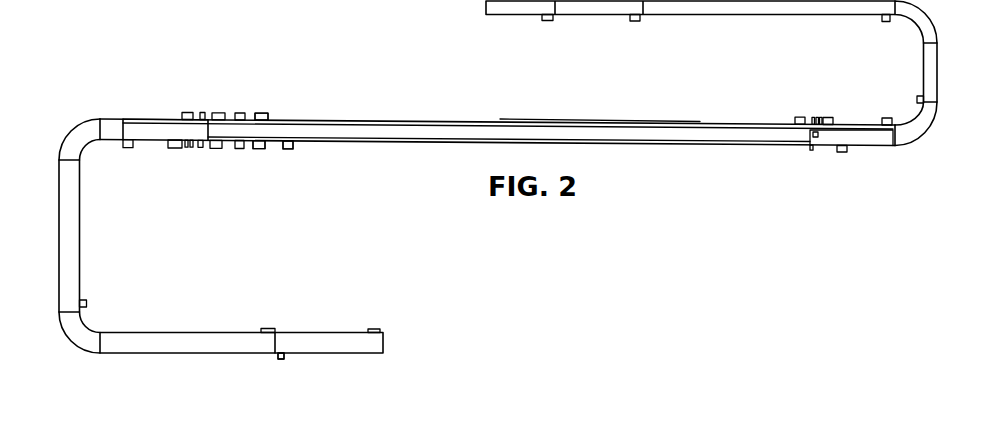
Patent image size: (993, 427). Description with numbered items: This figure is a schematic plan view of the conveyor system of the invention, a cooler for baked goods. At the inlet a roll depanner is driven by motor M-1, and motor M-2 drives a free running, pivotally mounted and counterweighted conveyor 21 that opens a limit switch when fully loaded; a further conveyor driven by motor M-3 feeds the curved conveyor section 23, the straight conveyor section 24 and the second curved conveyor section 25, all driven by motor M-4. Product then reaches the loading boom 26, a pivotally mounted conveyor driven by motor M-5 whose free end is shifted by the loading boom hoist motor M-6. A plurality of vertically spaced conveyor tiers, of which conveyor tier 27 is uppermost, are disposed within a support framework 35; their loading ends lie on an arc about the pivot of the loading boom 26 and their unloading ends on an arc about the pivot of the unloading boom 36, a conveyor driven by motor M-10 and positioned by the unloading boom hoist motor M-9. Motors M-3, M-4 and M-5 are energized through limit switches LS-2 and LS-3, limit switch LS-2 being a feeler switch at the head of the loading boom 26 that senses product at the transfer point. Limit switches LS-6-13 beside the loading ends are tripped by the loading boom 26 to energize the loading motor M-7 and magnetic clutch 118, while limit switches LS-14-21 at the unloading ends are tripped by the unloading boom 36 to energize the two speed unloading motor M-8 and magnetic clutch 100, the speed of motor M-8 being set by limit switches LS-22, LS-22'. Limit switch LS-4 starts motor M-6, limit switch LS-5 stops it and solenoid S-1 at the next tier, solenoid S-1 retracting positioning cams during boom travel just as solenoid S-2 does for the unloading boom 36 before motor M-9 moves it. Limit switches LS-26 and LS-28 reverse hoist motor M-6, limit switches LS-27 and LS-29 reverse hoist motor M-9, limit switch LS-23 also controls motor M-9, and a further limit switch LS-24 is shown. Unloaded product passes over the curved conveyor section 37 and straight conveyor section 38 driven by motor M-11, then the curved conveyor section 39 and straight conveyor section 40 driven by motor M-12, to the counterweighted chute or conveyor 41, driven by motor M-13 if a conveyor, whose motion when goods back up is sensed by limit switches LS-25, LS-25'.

The counterweighted conveyor 21 is at (599, 15).
The curved conveyor section 23 is at (925, 10).
The straight conveyor section 24 is at (937, 66).
The second curved conveyor section 25 is at (926, 128).
The loading boom 26 is at (872, 137).
The conveyor tier 27 is at (471, 123).
The support framework 35 is at (572, 124).
The unloading boom 36 is at (143, 130).
The curved conveyor section 37 is at (71, 141).
The straight conveyor section 38 is at (62, 213).
The curved conveyor section 39 is at (73, 325).
The straight conveyor section 40 is at (205, 337).
The counterweighted chute or conveyor 41 is at (328, 338).
The magnetic clutch 100 is at (217, 149).
The magnetic clutch 118 is at (215, 112).
The motor M-1 is at (549, 21).
The motor M-2 is at (636, 21).
The motor M-3 is at (886, 22).
The motor M-4 is at (919, 99).
The motor M-5 is at (905, 104).
The loading boom hoist motor M-6 is at (827, 117).
The loading motor M-7 is at (240, 112).
The tier conveyor unloading motor M-8 is at (242, 149).
The unloading boom hoist motor M-9 is at (178, 149).
The motor M-10 is at (131, 149).
The motor M-11 is at (87, 303).
The motor M-12 is at (268, 329).
The motor M-13 is at (427, 305).
The solenoid S-1 is at (858, 158).
The solenoid activated drive mechanism S-2 is at (185, 112).
The limit switch LS-2 is at (816, 137).
The limit switch LS-3 is at (314, 93).
The limit switch LS-4 is at (262, 113).
The limit switch LS-5 is at (811, 150).
The limit switches LS-6-13 is at (813, 117).
The limit switches LS-14-21 is at (202, 112).
The limit switch LS-22 is at (321, 152).
The limit switch LS-22' is at (347, 152).
The limit switch LS-23 is at (262, 149).
The limit switch LS-24 is at (324, 163).
The limit switch LS-25 is at (396, 350).
The limit switch LS-25' is at (393, 348).
The limit switch LS-26 is at (799, 117).
The limit switch LS-27 is at (188, 149).
The limit switch LS-28 is at (818, 117).
The limit switch LS-29 is at (192, 149).